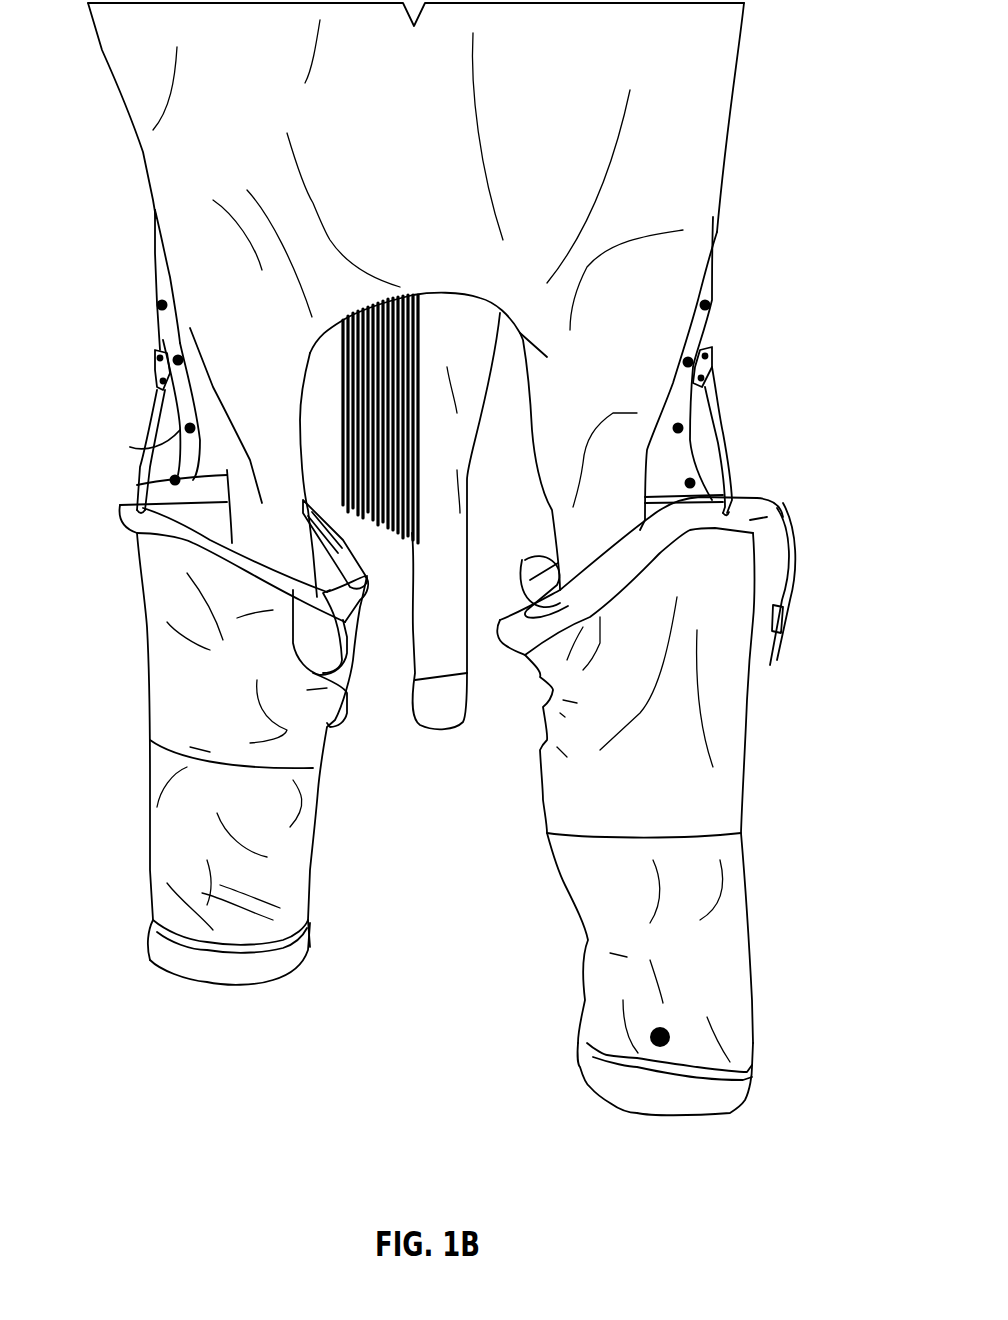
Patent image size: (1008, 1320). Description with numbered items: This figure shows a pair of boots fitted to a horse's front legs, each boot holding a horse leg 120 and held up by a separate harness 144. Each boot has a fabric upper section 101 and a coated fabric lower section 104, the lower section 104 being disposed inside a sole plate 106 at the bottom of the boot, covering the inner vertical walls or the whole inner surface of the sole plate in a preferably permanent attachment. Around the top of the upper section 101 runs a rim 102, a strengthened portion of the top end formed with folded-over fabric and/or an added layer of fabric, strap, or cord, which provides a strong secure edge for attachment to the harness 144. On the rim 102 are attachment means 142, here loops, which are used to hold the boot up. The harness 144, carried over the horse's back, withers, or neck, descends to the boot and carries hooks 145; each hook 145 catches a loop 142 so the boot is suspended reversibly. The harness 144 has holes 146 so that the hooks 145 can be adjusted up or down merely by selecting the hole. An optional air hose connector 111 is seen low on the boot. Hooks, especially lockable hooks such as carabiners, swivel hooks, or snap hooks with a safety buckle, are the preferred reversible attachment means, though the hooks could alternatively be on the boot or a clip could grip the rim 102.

The fabric upper section 101 is at (725, 737).
The rim 102 is at (777, 517).
The coated fabric lower section 104 is at (205, 905).
The sole plate 106 is at (657, 1093).
The air hose connector 111 is at (645, 1035).
The horse leg 120 is at (653, 265).
The attachment means 142 is at (145, 453).
The harness 144 is at (140, 467).
The hook 145 is at (155, 363).
The holes 146 is at (157, 305).